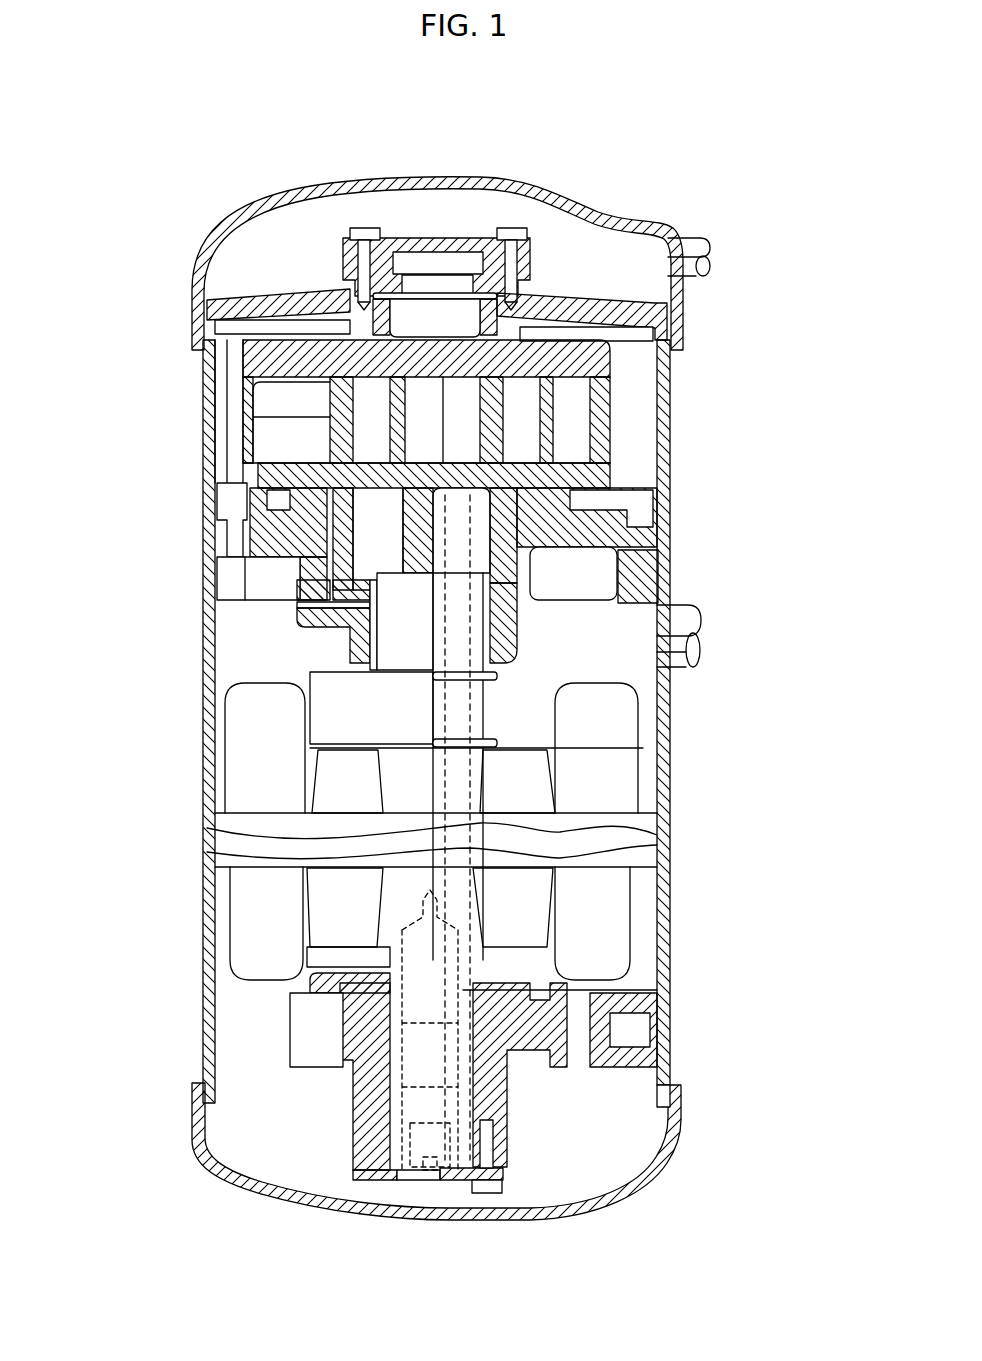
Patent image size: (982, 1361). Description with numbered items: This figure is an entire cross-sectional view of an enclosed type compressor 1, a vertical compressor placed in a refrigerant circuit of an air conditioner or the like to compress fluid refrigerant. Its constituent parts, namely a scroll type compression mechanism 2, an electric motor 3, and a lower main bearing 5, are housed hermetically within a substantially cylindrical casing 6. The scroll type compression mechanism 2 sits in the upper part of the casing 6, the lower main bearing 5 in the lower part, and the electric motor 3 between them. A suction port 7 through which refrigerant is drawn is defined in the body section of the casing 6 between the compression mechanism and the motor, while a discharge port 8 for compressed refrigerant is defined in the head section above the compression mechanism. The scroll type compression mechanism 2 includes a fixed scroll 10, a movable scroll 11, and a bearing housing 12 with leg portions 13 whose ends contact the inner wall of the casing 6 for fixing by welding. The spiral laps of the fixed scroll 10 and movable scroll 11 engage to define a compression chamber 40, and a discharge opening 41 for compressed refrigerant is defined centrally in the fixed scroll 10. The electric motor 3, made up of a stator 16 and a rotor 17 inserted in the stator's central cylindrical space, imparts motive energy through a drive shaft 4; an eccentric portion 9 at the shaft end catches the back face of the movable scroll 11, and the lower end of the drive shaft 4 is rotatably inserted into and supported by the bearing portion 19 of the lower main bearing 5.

The enclosed type compressor 1 is at (697, 187).
The scroll type compression mechanism 2 is at (638, 384).
The electric motor 3 is at (503, 827).
The drive shaft 4 is at (477, 710).
The lower main bearing 5 is at (568, 1090).
The casing 6 is at (205, 900).
The suction port 7 is at (685, 625).
The discharge port 8 is at (705, 250).
The eccentric portion 9 is at (458, 512).
The fixed scroll 10 is at (442, 448).
The movable scroll 11 is at (262, 472).
The bearing housing 12 is at (370, 560).
The leg portions 13 is at (636, 570).
The stator 16 is at (622, 857).
The rotor 17 is at (527, 793).
The bearing portion 19 is at (376, 1162).
The compression chamber 40 is at (468, 413).
The discharge opening 41 is at (443, 352).